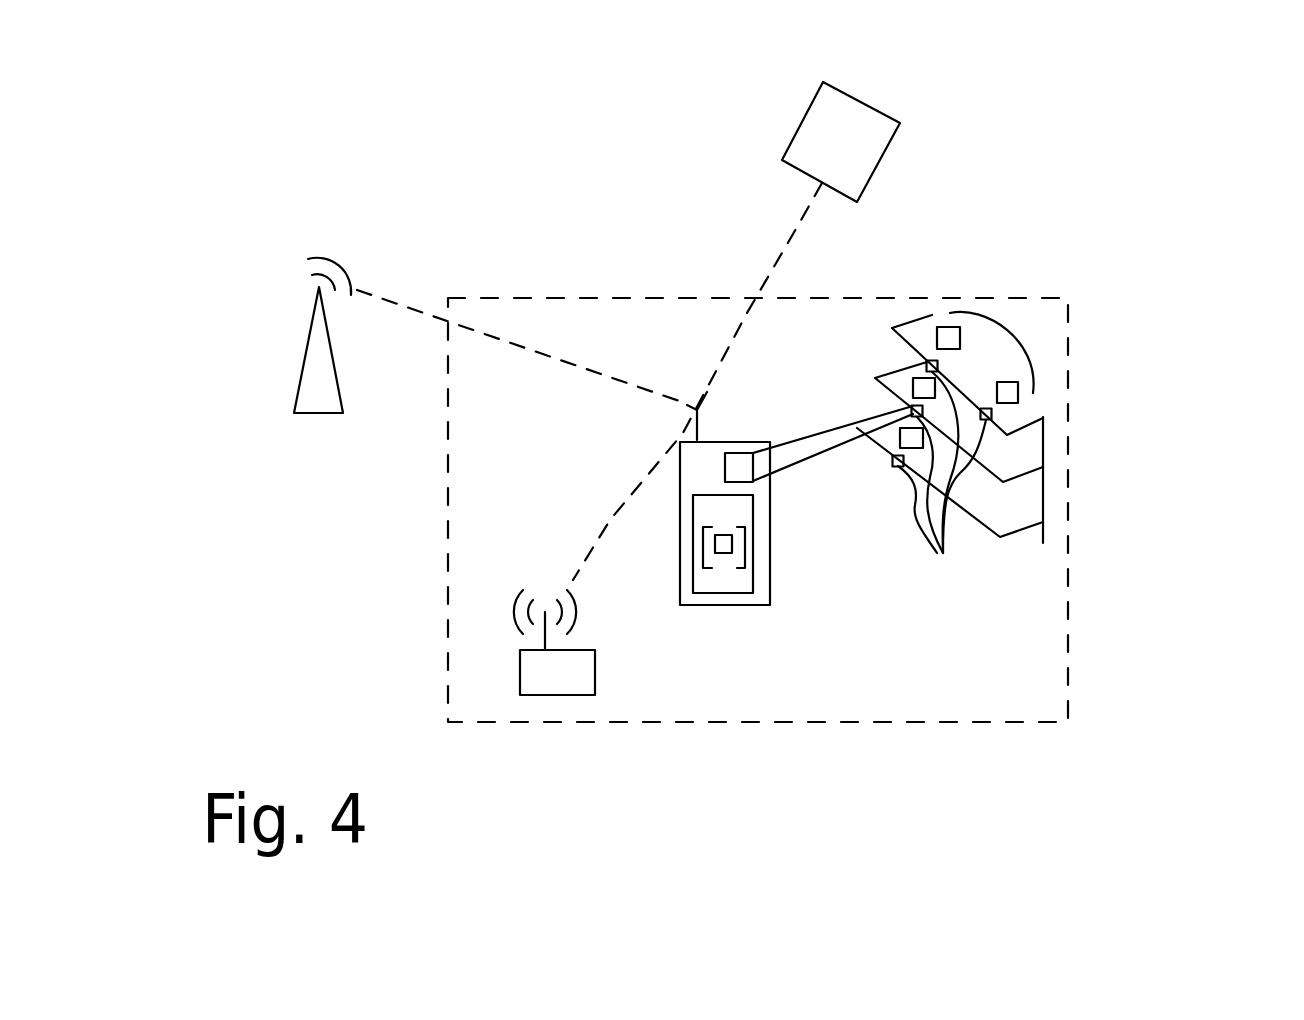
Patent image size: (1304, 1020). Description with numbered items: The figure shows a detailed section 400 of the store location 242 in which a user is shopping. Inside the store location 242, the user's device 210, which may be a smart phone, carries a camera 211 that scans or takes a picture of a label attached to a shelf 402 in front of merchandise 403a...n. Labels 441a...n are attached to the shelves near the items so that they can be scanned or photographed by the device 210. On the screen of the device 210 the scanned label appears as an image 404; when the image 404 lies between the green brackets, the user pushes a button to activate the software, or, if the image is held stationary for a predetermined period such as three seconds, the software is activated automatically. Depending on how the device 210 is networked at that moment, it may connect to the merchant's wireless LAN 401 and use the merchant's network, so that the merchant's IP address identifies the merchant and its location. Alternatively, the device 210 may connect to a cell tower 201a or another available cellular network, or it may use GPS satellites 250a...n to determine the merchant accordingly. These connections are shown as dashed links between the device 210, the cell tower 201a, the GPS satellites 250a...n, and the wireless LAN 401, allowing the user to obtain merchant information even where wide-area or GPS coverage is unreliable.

The detailed section 400 is at (1177, 115).
The store location 242 is at (970, 298).
The cell tower 201a is at (298, 382).
The GPS satellites 250a...n is at (880, 160).
The device 210 is at (729, 440).
The camera 211 is at (758, 473).
The image 404 is at (732, 545).
The shelf 402 is at (1043, 424).
The merchandise 403a...n is at (1008, 338).
The labels 441a...n is at (948, 474).
The wireless LAN 401 is at (595, 673).